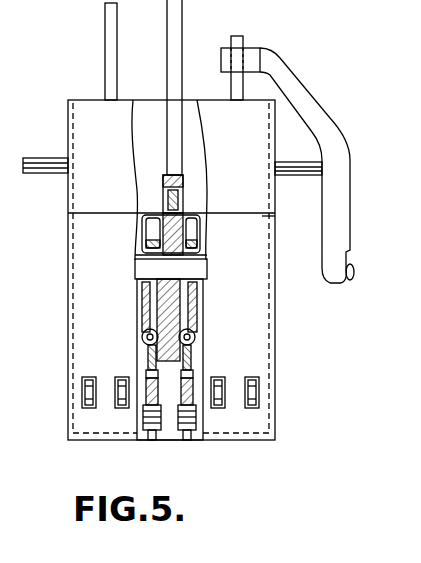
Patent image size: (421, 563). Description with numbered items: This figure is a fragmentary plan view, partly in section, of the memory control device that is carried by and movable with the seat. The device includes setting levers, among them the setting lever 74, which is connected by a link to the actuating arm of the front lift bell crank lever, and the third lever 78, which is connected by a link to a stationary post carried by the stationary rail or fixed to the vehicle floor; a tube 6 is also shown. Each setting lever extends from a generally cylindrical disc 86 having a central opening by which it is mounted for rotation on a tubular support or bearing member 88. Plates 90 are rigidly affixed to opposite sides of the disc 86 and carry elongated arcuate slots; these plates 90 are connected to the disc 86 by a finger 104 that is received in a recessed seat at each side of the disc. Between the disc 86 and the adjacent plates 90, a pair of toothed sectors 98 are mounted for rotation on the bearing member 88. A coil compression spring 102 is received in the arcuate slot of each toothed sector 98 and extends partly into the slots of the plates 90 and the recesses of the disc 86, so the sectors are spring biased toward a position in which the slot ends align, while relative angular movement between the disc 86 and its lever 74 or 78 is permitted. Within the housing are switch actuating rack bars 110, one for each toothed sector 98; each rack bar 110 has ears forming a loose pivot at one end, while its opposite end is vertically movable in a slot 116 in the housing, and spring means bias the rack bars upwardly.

The tube 6 is at (175, 18).
The setting lever 74 is at (105, 51).
The third lever 78 is at (243, 38).
The cylindrical disc 86 is at (193, 310).
The tubular support or bearing member 88 is at (135, 270).
The plate 90 is at (142, 232).
The toothed sector 98 is at (193, 365).
The coil compression spring 102 is at (199, 337).
The finger 104 is at (163, 200).
The switch actuating rack bar 110 is at (188, 393).
The slot 116 is at (257, 402).